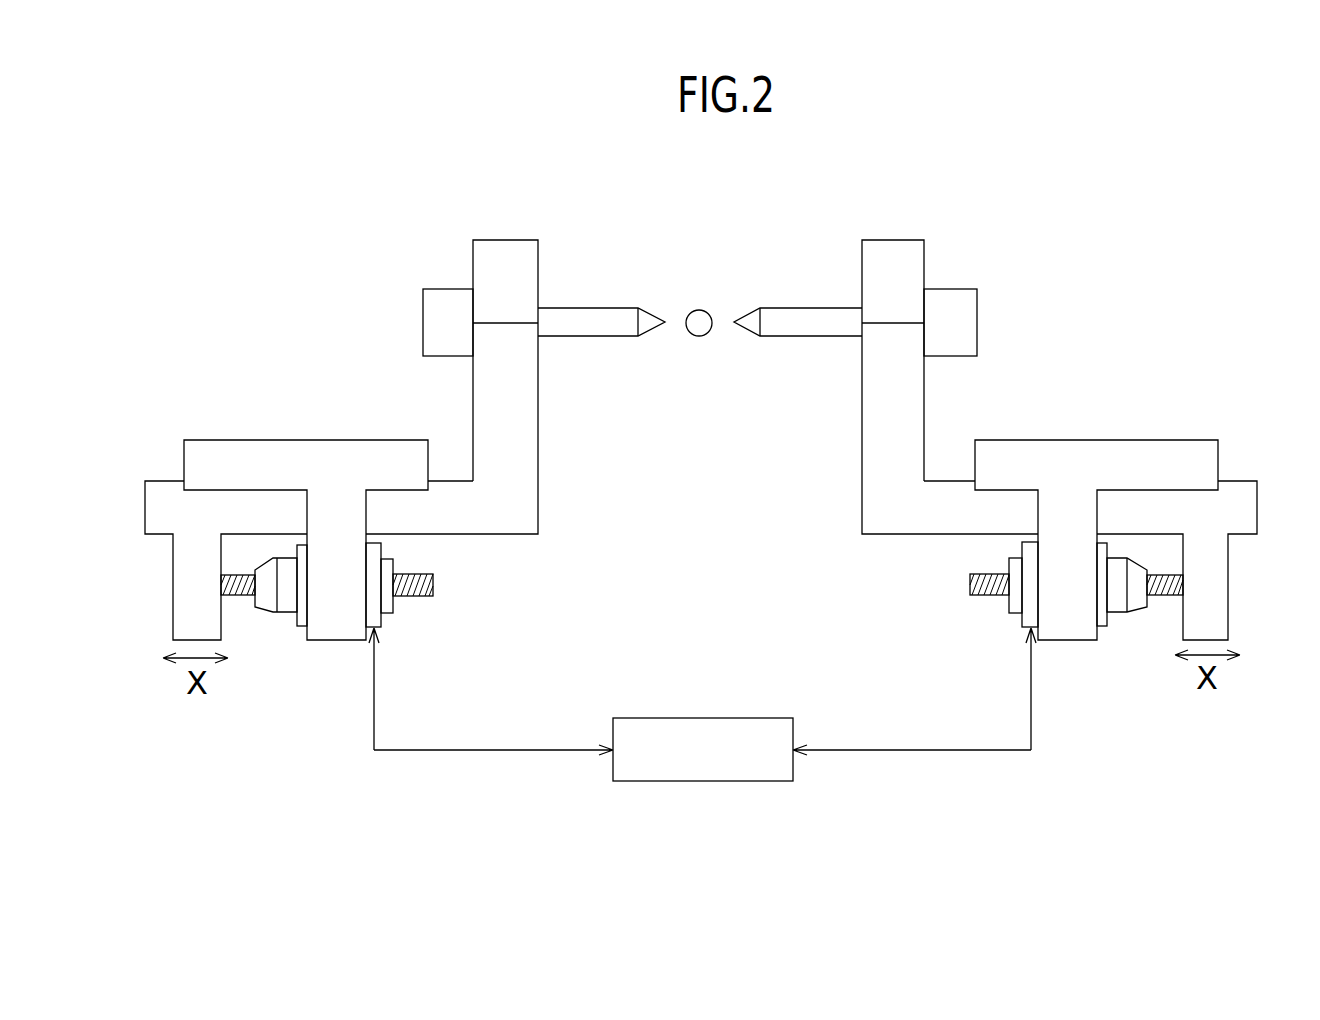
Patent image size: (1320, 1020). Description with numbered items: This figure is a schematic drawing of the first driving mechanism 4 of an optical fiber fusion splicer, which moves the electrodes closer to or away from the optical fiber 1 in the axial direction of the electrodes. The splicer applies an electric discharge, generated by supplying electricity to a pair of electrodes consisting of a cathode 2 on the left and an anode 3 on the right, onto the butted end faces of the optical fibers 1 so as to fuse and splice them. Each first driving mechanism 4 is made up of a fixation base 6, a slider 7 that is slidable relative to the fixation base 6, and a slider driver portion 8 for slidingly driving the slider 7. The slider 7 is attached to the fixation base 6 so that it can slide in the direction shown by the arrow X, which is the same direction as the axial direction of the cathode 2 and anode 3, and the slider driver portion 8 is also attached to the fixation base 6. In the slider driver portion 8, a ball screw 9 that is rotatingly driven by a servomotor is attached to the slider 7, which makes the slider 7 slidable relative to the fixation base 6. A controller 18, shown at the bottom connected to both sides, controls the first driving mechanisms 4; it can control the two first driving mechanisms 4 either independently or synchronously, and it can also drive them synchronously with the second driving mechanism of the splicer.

The optical fiber 1 is at (702, 328).
The cathode 2 is at (588, 315).
The anode 3 is at (805, 315).
The first driving mechanism 4 is at (288, 430).
The fixation base 6 is at (347, 450).
The slider 7 is at (467, 528).
The slider driver portion 8 is at (388, 603).
The ball screw 9 is at (240, 596).
The controller 18 is at (733, 718).